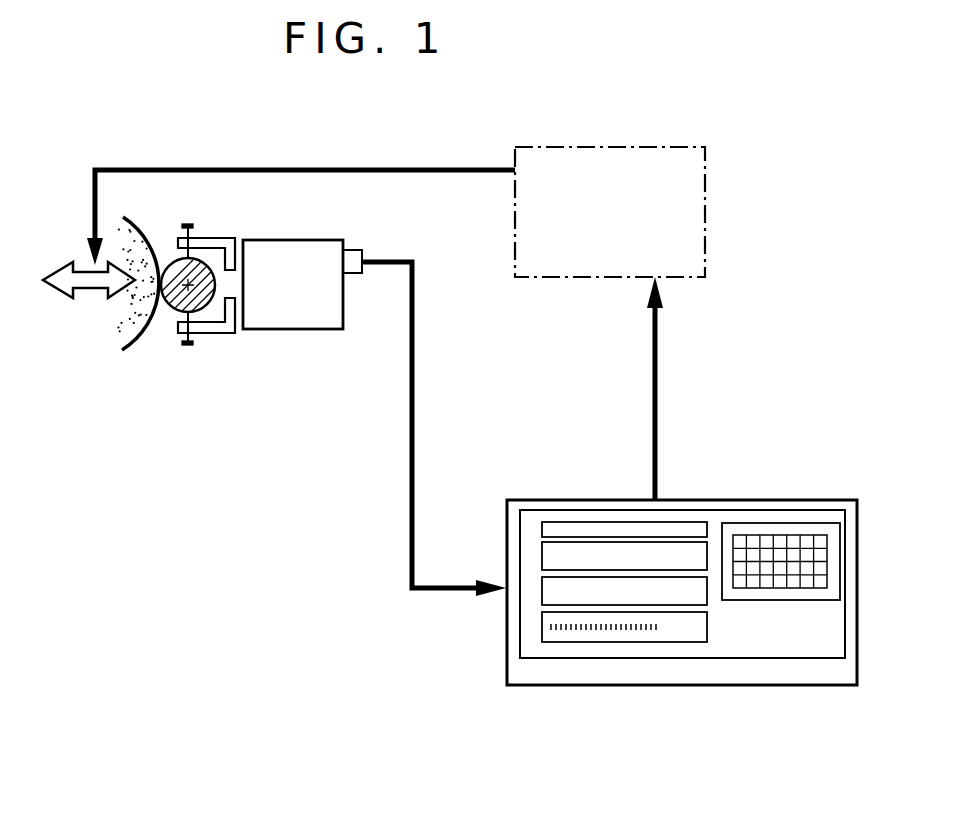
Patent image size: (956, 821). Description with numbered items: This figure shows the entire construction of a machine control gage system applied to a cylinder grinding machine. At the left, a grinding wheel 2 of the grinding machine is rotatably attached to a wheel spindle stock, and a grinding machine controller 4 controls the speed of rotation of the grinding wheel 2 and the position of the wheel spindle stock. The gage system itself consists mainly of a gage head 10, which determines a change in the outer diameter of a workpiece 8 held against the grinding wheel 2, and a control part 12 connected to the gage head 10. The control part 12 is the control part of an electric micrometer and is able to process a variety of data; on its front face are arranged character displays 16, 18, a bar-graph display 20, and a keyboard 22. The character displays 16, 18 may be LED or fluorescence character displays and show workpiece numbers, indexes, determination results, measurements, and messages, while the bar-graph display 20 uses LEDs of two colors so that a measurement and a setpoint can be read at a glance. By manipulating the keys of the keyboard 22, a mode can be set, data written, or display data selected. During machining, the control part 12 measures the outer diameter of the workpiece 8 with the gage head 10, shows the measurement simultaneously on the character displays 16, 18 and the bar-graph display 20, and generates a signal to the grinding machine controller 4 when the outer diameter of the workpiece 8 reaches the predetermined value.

The grinding wheel 2 is at (128, 323).
The grinding machine controller 4 is at (623, 147).
The workpiece 8 is at (170, 263).
The gage head 10 is at (243, 335).
The control part 12 is at (678, 554).
The character display 16 is at (540, 555).
The character display 18 is at (540, 593).
The bar-graph display 20 is at (540, 628).
The keyboard 22 is at (832, 568).